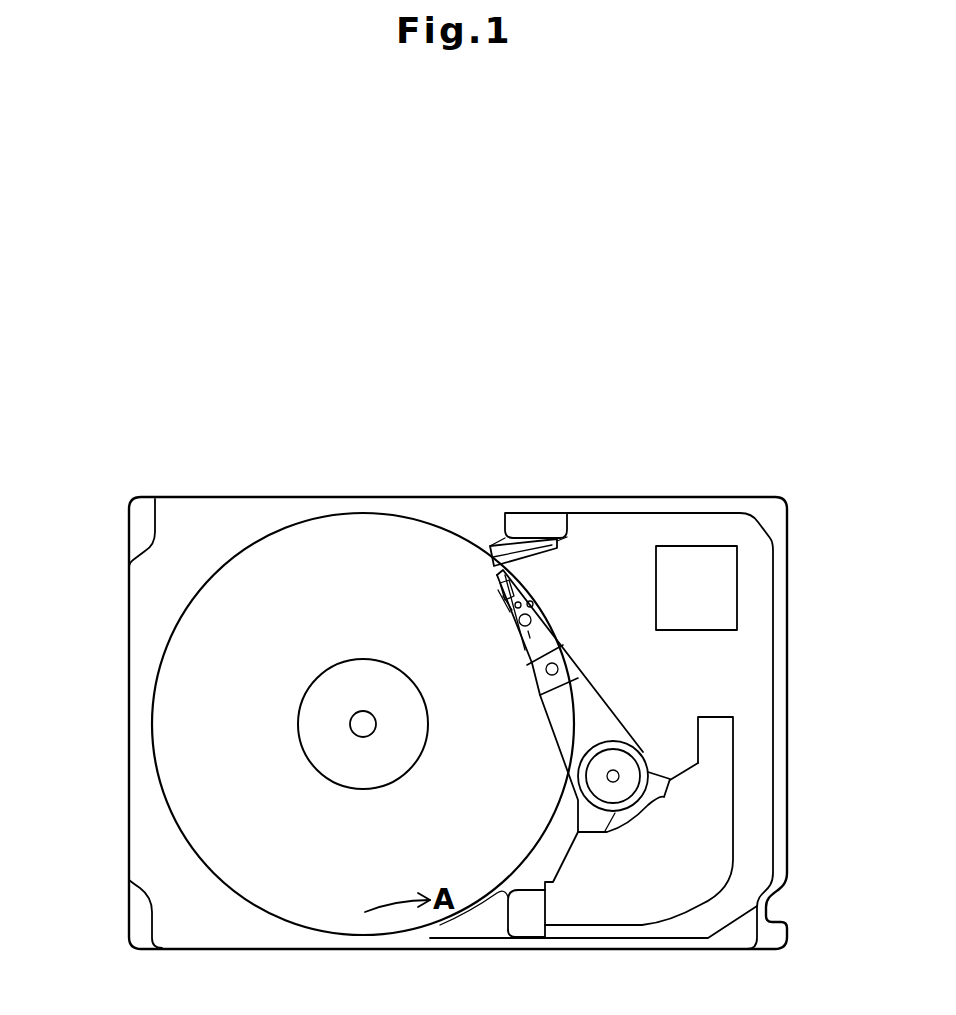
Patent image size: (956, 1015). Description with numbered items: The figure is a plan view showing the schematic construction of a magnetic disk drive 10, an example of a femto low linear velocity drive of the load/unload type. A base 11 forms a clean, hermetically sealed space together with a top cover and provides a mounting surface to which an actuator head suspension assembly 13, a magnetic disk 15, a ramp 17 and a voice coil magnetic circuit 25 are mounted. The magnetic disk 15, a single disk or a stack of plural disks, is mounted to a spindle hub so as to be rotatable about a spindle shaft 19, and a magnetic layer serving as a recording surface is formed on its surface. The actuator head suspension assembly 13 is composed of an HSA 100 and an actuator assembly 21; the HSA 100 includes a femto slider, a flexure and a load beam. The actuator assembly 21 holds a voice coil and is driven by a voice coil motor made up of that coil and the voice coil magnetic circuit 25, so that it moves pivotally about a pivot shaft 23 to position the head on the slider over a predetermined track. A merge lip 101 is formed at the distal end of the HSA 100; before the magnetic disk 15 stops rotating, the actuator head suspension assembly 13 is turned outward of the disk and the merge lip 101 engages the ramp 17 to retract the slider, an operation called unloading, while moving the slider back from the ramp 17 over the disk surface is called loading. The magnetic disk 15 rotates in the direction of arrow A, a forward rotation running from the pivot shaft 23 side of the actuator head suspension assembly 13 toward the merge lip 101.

The magnetic disk drive 10 is at (505, 452).
The base 11 is at (786, 748).
The actuator head suspension assembly 13 is at (531, 698).
The magnetic disk 15 is at (178, 717).
The ramp 17 is at (542, 553).
The spindle shaft 19 is at (363, 725).
The actuator assembly 21 is at (572, 716).
The pivot shaft 23 is at (614, 774).
The voice coil magnetic circuit 25 is at (692, 826).
The HSA 100 is at (537, 636).
The merge lip 101 is at (493, 572).